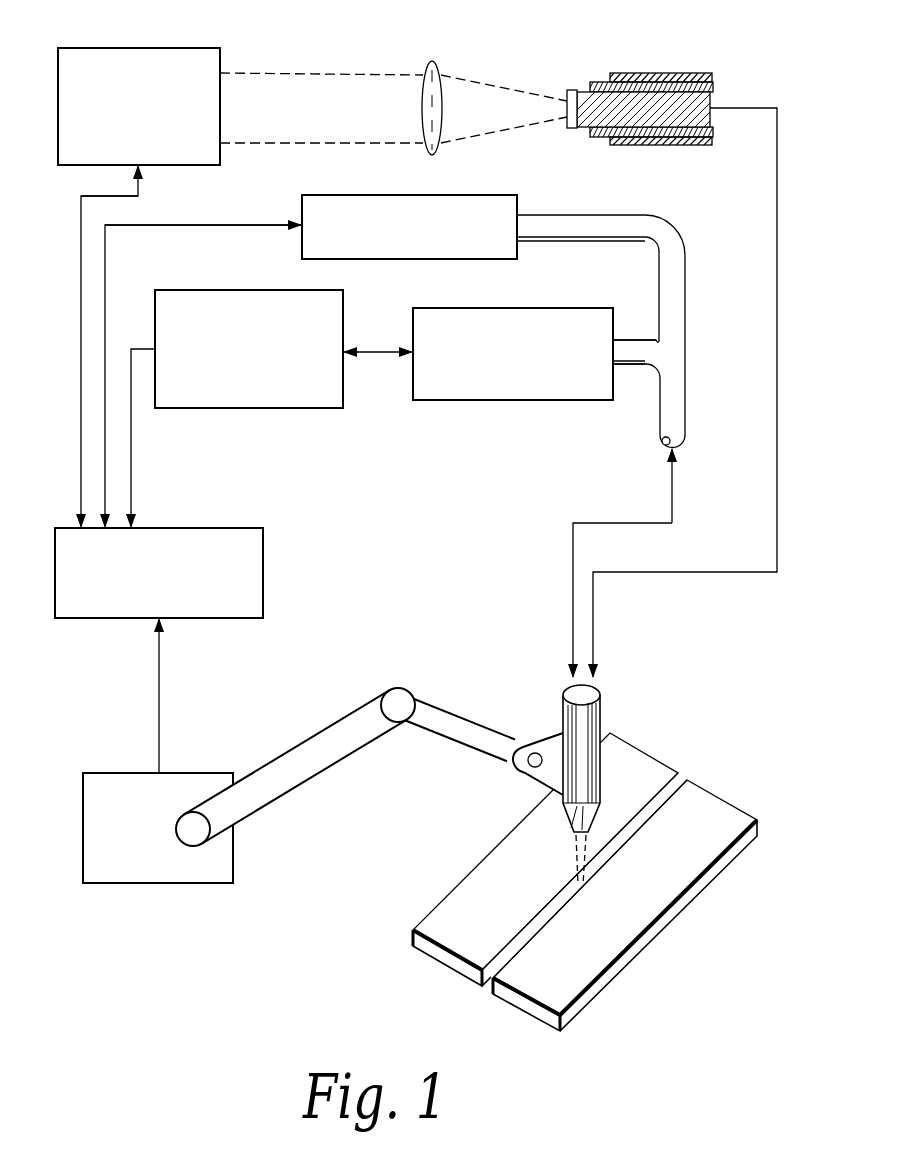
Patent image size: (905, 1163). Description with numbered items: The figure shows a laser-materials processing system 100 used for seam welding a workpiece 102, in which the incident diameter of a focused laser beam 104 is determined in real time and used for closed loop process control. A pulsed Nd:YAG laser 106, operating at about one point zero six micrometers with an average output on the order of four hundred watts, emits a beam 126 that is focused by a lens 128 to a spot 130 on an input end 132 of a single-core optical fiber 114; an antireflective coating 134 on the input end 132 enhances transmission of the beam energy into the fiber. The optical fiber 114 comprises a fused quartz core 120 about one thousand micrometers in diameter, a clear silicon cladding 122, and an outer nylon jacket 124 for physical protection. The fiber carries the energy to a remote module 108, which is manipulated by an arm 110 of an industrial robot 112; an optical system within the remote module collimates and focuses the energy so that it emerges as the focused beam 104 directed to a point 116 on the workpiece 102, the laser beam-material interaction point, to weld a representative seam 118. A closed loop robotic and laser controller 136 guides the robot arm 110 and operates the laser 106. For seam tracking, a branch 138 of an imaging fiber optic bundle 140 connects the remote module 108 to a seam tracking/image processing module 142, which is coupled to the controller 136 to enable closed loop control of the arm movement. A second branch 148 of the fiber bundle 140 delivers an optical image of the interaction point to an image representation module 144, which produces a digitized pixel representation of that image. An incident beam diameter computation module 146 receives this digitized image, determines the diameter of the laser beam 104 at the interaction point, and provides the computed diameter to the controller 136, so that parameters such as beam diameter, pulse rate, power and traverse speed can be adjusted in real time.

The laser-materials processing system 100 is at (328, 951).
The workpiece 102 is at (500, 838).
The focused laser beam 104 is at (575, 852).
The Nd:YAG laser 106 is at (128, 48).
The remote module 108 is at (600, 712).
The arm 110 is at (445, 712).
The industrial robot 112 is at (120, 773).
The single-core optical fiber 114 is at (777, 196).
The point 116 is at (582, 886).
The seam 118 is at (688, 778).
The fused quartz core 120 is at (655, 94).
The silicon cladding 122 is at (606, 137).
The nylon jacket 124 is at (682, 73).
The beam 126 is at (360, 73).
The lens 128 is at (443, 68).
The spot 130 is at (570, 113).
The input end 132 is at (565, 98).
The antireflective coating 134 is at (578, 92).
The closed loop robotic and laser controller 136 is at (221, 528).
The branch 138 is at (685, 297).
The fiber optic bundle 140 is at (689, 432).
The seam tracking/image processing module 142 is at (335, 195).
The image representation module 144 is at (515, 400).
The incident beam diameter computation module 146 is at (218, 290).
The branch 148 is at (630, 366).